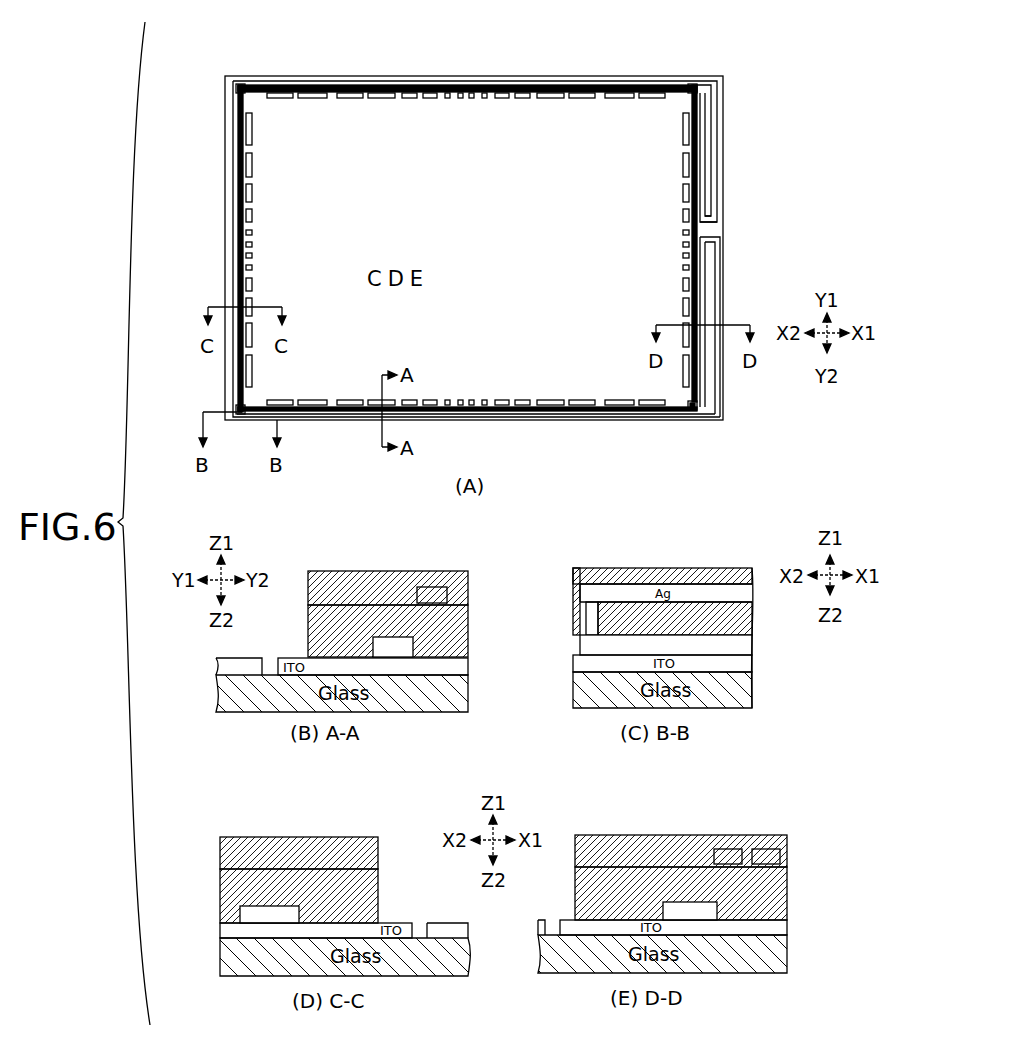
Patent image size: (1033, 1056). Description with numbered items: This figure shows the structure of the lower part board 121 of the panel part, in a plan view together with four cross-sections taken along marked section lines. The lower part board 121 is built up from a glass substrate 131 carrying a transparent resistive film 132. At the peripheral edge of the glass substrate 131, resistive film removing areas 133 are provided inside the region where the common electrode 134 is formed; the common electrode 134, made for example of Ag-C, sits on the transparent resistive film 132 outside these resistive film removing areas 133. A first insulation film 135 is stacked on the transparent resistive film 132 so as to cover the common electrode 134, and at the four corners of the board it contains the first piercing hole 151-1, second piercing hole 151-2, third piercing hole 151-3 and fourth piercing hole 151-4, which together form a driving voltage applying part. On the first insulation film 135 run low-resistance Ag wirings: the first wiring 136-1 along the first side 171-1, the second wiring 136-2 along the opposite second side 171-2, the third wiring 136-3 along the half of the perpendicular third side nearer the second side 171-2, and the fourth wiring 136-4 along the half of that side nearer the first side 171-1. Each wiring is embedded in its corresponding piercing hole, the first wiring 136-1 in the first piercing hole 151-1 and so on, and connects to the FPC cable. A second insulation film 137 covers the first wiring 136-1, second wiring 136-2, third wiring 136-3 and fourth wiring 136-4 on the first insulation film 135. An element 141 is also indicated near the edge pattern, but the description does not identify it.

The lower part board 121 is at (235, 76).
The glass substrate 131 is at (468, 690).
The transparent resistive film 132 is at (468, 665).
The resistive film removing areas 133 is at (252, 215).
The common electrode 134 is at (413, 645).
The first insulation film 135 is at (468, 620).
The first wiring 136-1 is at (660, 420).
The second wiring 136-2 is at (515, 80).
The third wiring 136-3 is at (718, 213).
The fourth wiring 136-4 is at (718, 265).
The second insulation film 137 is at (468, 575).
The electrode pattern 141 is at (333, 99).
The first piercing hole 151-1 is at (238, 410).
The second piercing hole 151-2 is at (238, 88).
The third piercing hole 151-3 is at (700, 88).
The fourth piercing hole 151-4 is at (700, 405).
The first side 171-1 is at (530, 420).
The second side 171-2 is at (410, 78).